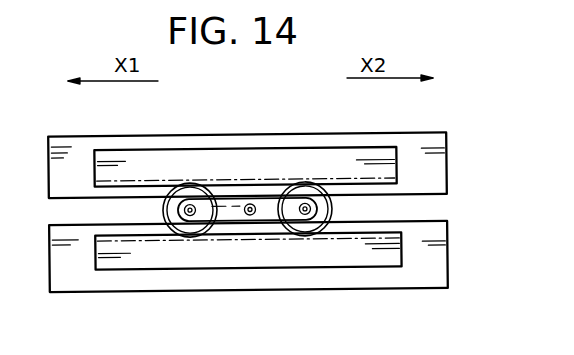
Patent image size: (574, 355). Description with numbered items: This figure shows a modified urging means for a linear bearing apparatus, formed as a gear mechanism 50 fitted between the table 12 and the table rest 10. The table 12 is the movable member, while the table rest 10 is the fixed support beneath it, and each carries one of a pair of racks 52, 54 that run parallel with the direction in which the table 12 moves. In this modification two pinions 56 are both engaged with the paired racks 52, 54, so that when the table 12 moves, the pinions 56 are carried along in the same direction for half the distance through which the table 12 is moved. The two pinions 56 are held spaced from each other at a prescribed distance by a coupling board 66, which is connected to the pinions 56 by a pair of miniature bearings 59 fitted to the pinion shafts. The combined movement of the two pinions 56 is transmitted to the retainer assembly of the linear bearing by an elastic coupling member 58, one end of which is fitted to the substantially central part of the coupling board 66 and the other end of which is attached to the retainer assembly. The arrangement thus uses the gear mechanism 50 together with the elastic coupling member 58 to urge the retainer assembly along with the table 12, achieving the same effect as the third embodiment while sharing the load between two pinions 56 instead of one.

The table rest 10 is at (447, 263).
The table 12 is at (426, 146).
The gear mechanism 50 is at (428, 209).
The rack 52 is at (388, 248).
The rack 54 is at (383, 156).
The pinion 56 is at (192, 190).
The elastic coupling member 58 is at (248, 215).
The miniature bearing 59 is at (168, 212).
The coupling board 66 is at (270, 212).